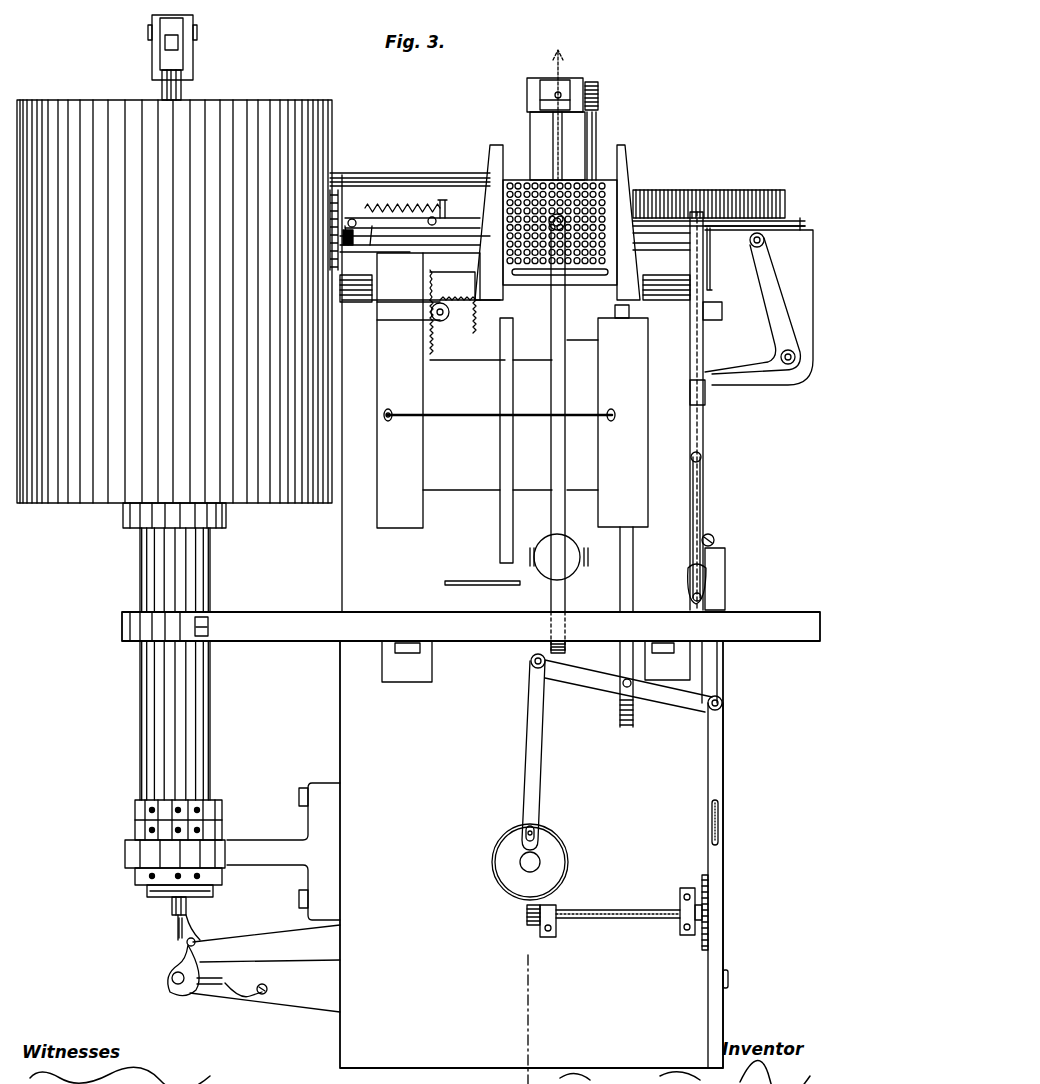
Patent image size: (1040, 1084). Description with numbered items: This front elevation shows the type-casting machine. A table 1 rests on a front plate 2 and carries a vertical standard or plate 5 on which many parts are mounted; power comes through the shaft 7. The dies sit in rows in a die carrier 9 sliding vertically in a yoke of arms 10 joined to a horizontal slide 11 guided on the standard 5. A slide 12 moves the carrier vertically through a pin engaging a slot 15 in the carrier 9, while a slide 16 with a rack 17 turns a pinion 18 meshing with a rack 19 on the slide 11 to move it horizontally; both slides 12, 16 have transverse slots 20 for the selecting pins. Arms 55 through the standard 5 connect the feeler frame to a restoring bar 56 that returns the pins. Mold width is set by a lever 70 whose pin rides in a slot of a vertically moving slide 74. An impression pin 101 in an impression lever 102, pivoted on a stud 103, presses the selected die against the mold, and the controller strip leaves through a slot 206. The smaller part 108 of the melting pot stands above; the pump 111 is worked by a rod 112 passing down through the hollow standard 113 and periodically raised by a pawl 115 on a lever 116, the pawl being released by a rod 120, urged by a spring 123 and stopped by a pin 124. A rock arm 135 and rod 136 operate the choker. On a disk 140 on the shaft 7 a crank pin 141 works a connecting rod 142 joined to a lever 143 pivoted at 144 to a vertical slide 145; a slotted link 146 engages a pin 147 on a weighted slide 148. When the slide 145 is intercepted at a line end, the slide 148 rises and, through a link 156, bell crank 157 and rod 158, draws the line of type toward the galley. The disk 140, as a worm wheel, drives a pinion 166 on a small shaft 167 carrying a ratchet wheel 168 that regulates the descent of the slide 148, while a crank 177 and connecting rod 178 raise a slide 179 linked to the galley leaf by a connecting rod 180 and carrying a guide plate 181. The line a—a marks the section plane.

The table 1 is at (471, 626).
The front plate 2 is at (531, 862).
The vertical standard or plate 5 is at (415, 392).
The shaft 7 is at (530, 862).
The die carrier 9 is at (519, 180).
The arms 10 is at (656, 170).
The horizontal slide 11 is at (451, 277).
The slide 12 is at (574, 434).
The slot 15 is at (535, 278).
The vertically moving slide 16 is at (510, 415).
The rack 17 is at (428, 350).
The pinion 18 is at (467, 345).
The rack 19 is at (434, 325).
The transverse slots 20 is at (541, 430).
The arms 55 is at (626, 398).
The restoring bar 56 is at (410, 420).
The lever 70 is at (470, 243).
The vertically moving slide 74 is at (400, 390).
The impression pin 101 is at (565, 230).
The impression lever 102 is at (567, 520).
The stud 103 is at (548, 572).
The smaller part of melting pot 108 is at (556, 129).
The pump 111 is at (182, 92).
The rod 112 is at (172, 908).
The hollow standard 113 is at (212, 700).
The pawl 115 is at (184, 962).
The lever 116 is at (265, 990).
The rod 120 is at (280, 938).
The spring 123 is at (236, 998).
The pin 124 is at (198, 922).
The rock arm 135 is at (600, 98).
The rod 136 is at (598, 128).
The disk 140 is at (504, 872).
The crank pin 141 is at (538, 828).
The connecting rod 142 is at (540, 775).
The lever 143 is at (677, 715).
The pivot 144 is at (623, 687).
The vertical slide 145 is at (633, 578).
The link 146 is at (723, 768).
The pin 147 is at (718, 842).
The weighted slide 148 is at (717, 670).
The link 156 is at (705, 470).
The bell crank 157 is at (782, 318).
The rod 158 is at (735, 242).
The pinion 166 is at (527, 928).
The small shaft 167 is at (628, 918).
The ratchet wheel 168 is at (702, 912).
The crank 177 is at (708, 582).
The connecting rod 178 is at (700, 512).
The slide 179 is at (700, 435).
The connecting rod 180 is at (700, 268).
The plate 181 is at (772, 214).
The slot 206 is at (464, 585).
The section line a— a is at (559, 104).